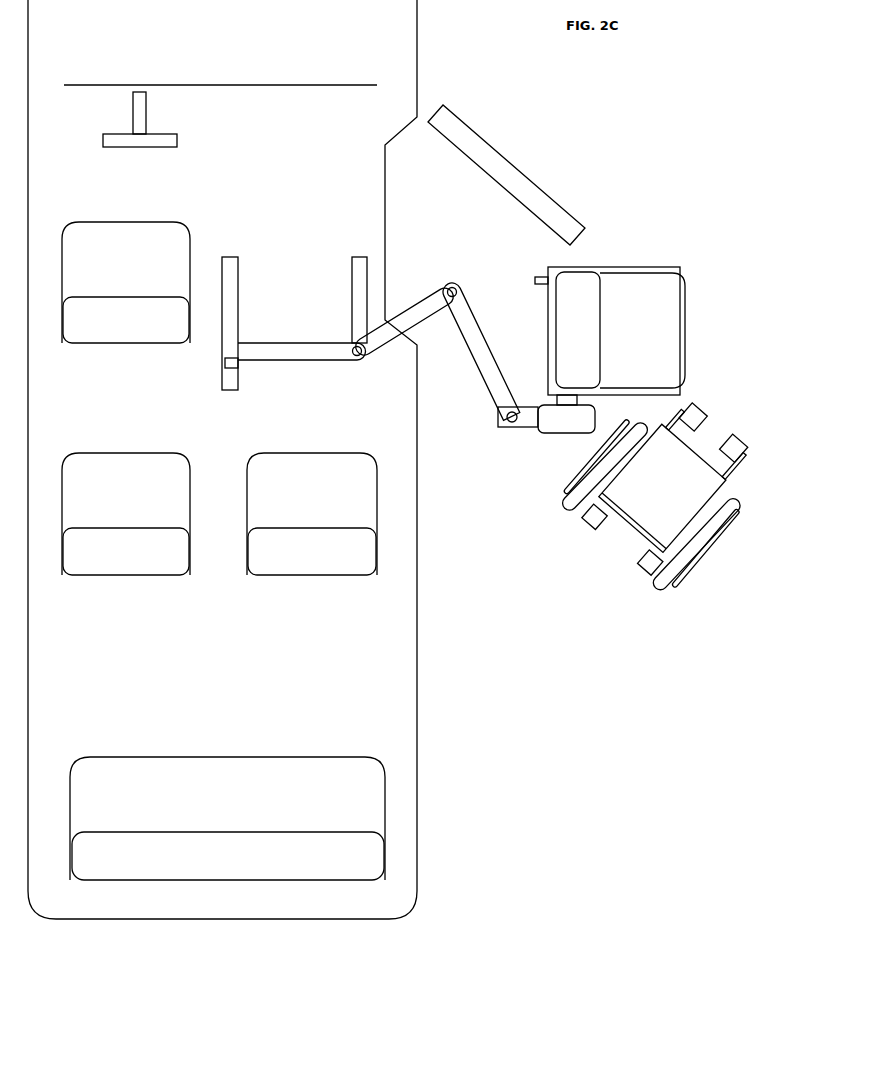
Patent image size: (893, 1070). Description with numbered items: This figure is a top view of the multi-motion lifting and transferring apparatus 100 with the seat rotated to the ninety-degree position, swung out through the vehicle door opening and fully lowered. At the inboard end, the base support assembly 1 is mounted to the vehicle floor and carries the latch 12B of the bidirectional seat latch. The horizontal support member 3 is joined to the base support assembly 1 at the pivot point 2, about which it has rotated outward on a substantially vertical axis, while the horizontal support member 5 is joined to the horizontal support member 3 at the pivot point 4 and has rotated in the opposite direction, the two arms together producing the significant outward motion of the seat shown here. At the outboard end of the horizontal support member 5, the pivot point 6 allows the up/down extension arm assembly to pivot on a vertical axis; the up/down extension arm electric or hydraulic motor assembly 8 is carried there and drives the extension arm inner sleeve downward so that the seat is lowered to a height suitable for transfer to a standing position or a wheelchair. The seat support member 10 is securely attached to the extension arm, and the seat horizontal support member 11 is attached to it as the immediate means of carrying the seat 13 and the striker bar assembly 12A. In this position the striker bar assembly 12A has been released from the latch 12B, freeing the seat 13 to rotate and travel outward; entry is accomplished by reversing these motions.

The base support assembly 1 is at (265, 349).
The pivot point 2 is at (363, 360).
The horizontal support member 3 is at (417, 318).
The pivot point 4 is at (448, 303).
The horizontal support member 5 is at (498, 391).
The pivot point 6 is at (507, 422).
The up/down extension arm electric or hydraulic motor assembly 8 is at (548, 425).
The seat support member 10 is at (577, 402).
The seat horizontal support member 11 is at (550, 267).
The striker bar assembly 12A is at (535, 280).
The latch 12B is at (225, 361).
The seat 13 is at (627, 292).
The multi-motion lifting and transferring apparatus 100 is at (768, 159).